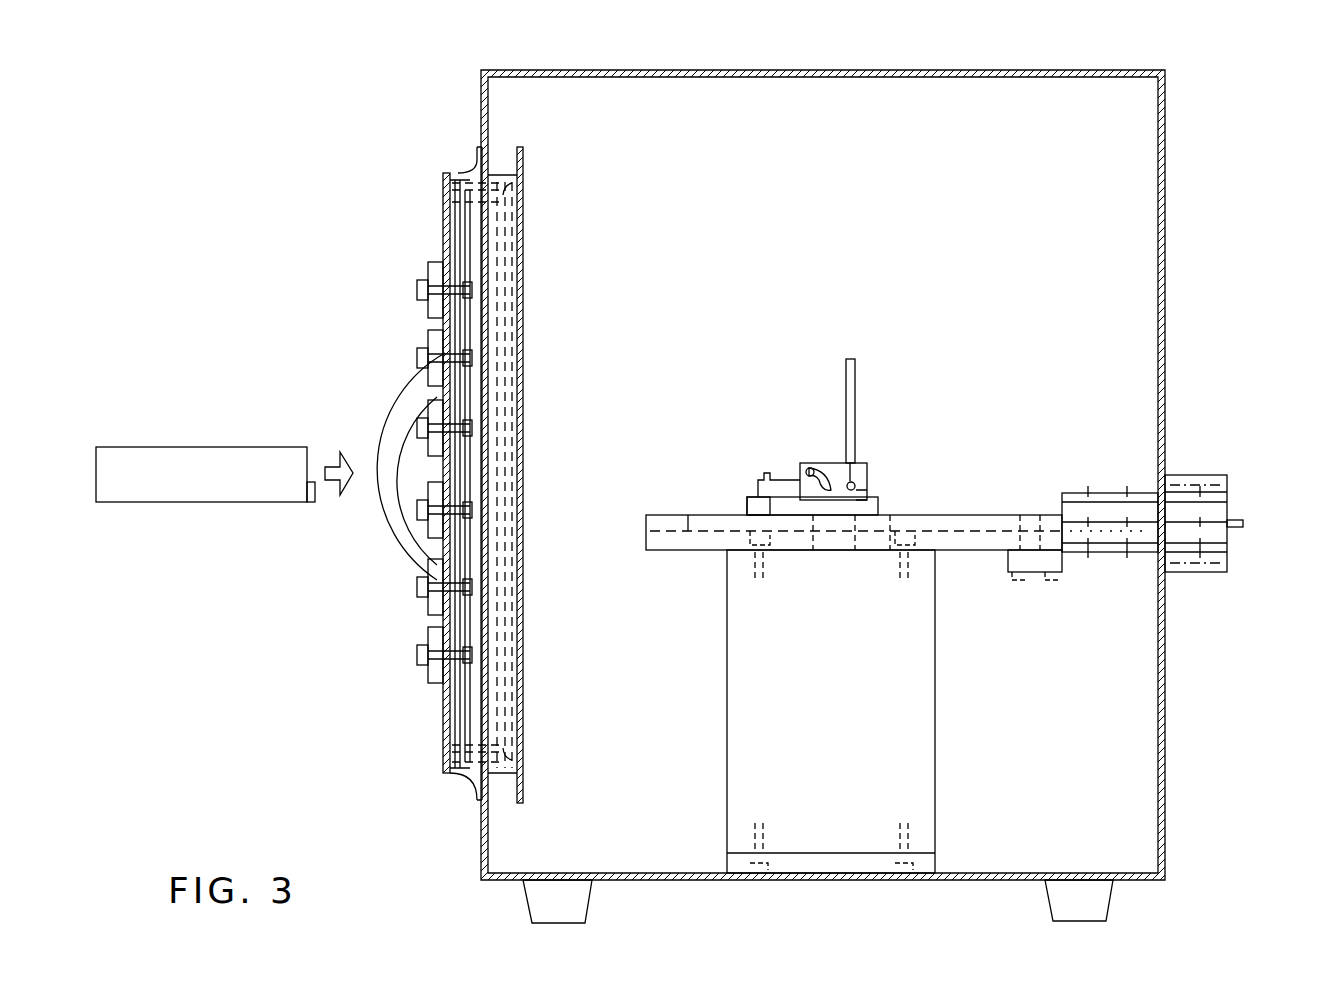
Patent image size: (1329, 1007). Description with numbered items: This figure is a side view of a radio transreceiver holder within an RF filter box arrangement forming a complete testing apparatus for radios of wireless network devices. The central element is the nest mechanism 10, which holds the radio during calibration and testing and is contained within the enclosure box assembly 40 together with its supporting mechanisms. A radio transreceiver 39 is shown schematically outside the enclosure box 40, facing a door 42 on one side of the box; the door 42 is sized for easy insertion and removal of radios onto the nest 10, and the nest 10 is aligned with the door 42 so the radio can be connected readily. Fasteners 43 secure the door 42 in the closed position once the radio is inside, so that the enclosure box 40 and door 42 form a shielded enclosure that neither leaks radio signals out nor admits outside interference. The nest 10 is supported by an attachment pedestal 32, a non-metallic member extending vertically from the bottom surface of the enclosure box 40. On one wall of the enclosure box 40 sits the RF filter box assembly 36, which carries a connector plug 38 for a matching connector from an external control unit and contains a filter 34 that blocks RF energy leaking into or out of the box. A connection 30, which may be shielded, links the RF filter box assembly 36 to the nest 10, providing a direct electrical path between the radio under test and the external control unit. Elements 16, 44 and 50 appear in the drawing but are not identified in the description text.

The nest mechanism 10 is at (762, 486).
The vertical post 16 is at (855, 400).
The connection 30 is at (972, 515).
The attachment pedestal 32 is at (918, 715).
The filter 34 is at (1108, 552).
The RF filter box assembly 36 is at (1190, 474).
The connector plug 38 is at (1228, 490).
The radio transreceiver 39 is at (183, 457).
The enclosure box assembly 40 is at (290, 124).
The door 42 is at (430, 328).
The fasteners 43 is at (415, 577).
The housing 44 is at (557, 80).
The foot 50 is at (1098, 897).